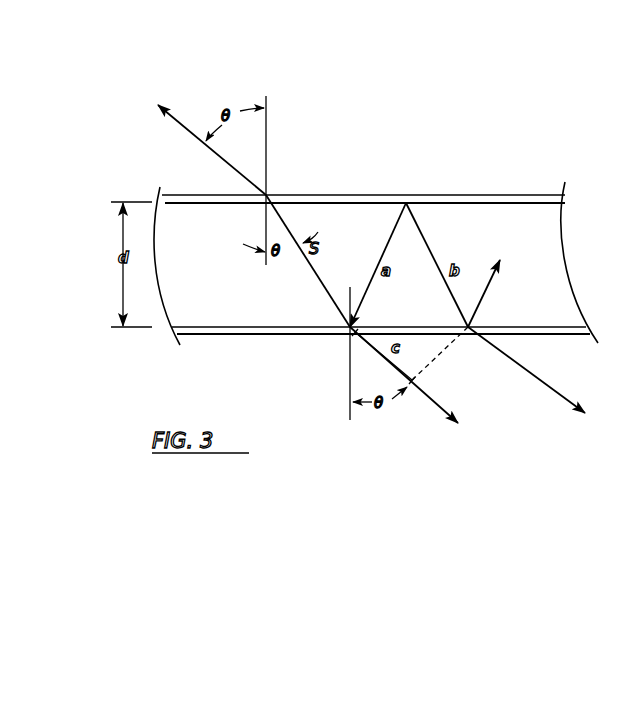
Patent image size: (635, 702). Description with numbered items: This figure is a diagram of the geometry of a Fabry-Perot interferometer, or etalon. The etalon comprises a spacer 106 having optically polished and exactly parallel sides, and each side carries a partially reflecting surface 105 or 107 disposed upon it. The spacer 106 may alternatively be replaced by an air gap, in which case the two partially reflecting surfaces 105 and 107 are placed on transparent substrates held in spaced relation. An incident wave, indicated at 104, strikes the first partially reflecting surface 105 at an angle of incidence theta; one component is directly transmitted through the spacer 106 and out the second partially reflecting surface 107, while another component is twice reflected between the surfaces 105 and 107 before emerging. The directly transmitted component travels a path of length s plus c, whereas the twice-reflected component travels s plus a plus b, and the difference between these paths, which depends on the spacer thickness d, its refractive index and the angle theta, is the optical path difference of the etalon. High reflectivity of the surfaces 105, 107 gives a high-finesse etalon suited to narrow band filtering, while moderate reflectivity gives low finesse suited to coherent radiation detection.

The incident light beam 104 is at (213, 73).
The partially reflecting surface 105 is at (513, 195).
The spacer 106 is at (563, 236).
The partially reflecting surface 107 is at (243, 342).